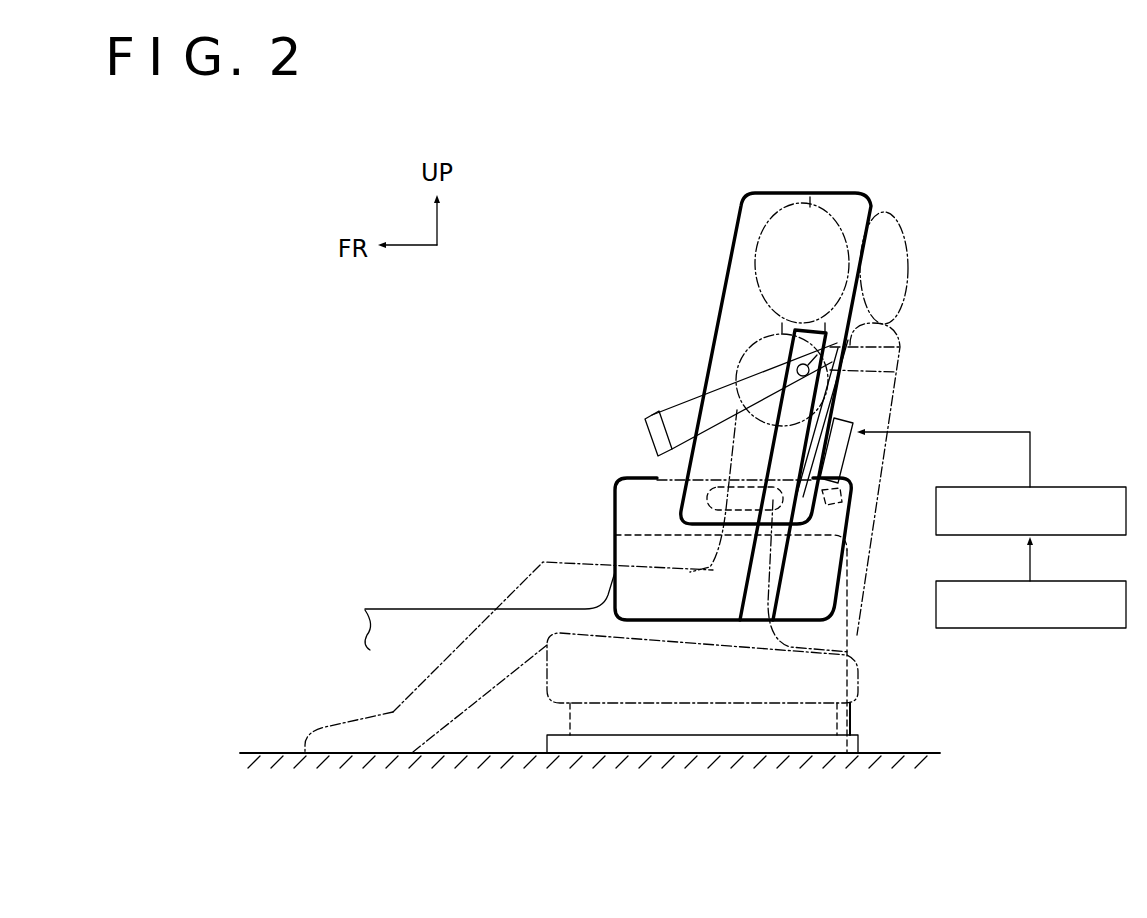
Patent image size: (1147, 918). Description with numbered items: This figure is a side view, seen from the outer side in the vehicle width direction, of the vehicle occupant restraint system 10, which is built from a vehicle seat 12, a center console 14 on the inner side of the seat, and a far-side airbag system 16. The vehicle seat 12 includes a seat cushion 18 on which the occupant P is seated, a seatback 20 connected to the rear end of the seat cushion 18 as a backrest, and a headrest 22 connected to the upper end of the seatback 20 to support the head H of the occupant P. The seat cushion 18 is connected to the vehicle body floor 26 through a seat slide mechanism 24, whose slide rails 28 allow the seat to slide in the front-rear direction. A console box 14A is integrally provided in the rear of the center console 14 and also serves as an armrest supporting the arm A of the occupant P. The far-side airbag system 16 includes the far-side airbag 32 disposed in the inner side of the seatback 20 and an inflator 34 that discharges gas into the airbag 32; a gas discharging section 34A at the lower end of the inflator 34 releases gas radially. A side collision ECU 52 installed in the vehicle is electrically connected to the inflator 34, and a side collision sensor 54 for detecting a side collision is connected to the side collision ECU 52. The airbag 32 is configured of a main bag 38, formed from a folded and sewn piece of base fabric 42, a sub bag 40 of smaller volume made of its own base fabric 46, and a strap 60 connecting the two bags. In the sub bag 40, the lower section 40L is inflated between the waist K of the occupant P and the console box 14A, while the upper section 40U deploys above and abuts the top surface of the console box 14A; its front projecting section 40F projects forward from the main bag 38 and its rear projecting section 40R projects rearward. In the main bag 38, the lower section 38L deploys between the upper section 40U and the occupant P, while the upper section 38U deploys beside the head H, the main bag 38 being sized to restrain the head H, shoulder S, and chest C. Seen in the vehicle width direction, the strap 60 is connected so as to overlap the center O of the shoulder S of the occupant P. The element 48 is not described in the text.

The vehicle occupant restraint system 10 is at (579, 182).
The vehicle seat 12 is at (866, 678).
The center console 14 is at (425, 608).
The console box 14A is at (850, 605).
The far-side airbag system 16 is at (798, 137).
The seat cushion 18 is at (637, 707).
The seatback 20 is at (897, 410).
The headrest 22 is at (907, 272).
The seat slide mechanism 24 is at (702, 743).
The vehicle body floor 26 is at (278, 753).
The slide rails 28 is at (732, 742).
The far-side airbag 32 is at (705, 267).
The inflator 34 is at (855, 452).
The gas discharging section 34A is at (850, 510).
The main bag 38 is at (714, 320).
The base fabric 42 is at (775, 358).
The upper section of main bag 38U is at (745, 242).
The lower section of main bag 38L is at (693, 498).
The sub bag 40 is at (608, 533).
The base fabric of sub bag 46 is at (734, 549).
The upper section of sub bag 40U is at (622, 503).
The lower section of sub bag 40L is at (632, 590).
The front projecting section 40F is at (641, 607).
The rear projecting section 40R is at (817, 600).
The tether 48 is at (713, 512).
The side collision ECU 52 is at (1095, 488).
The side collision sensor 54 is at (1095, 581).
The strap 60 is at (762, 449).
The occupant P is at (769, 212).
The head H is at (810, 193).
The chest C is at (707, 383).
The center of shoulder O is at (898, 345).
The shoulder S is at (895, 372).
The arm A is at (643, 432).
The waist K is at (753, 610).